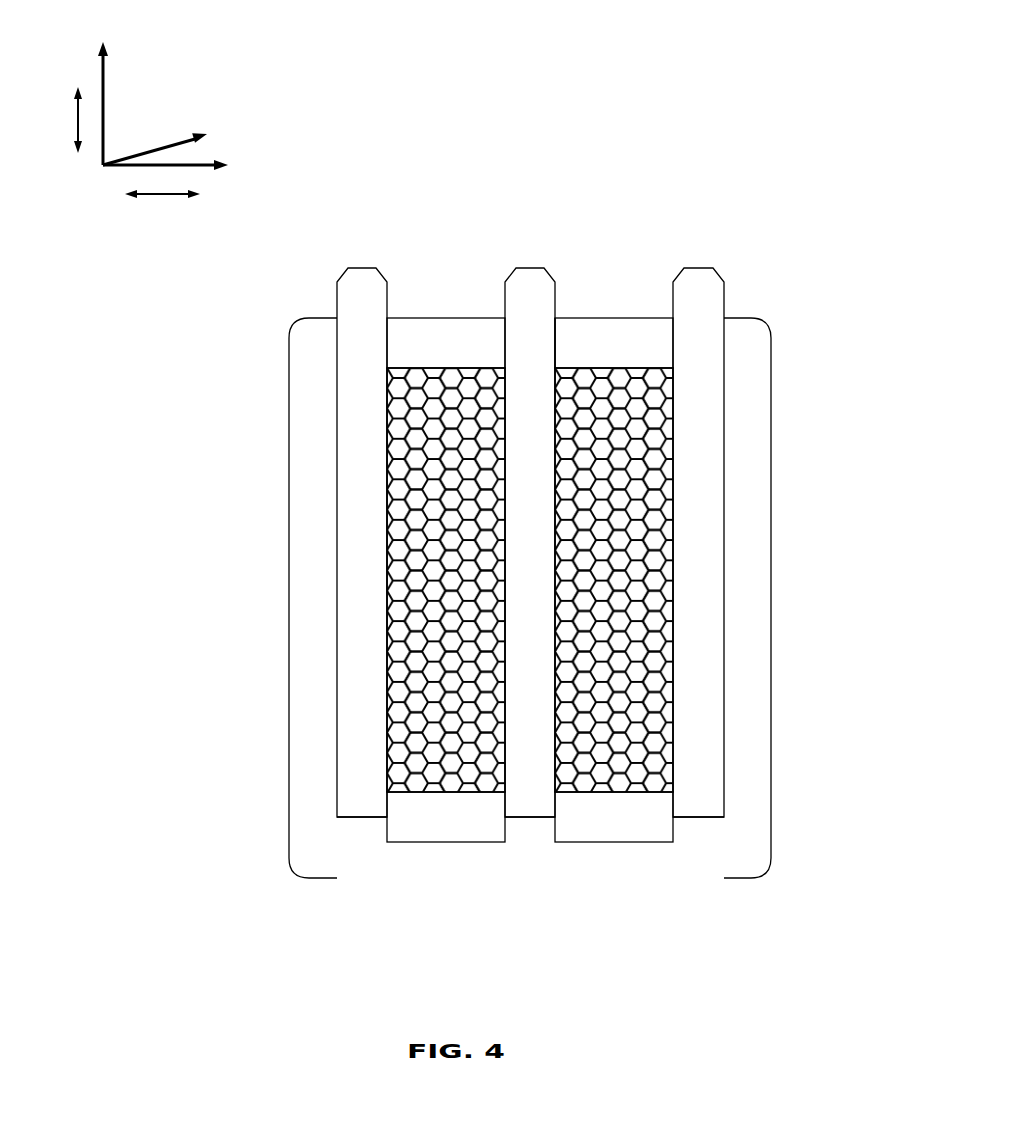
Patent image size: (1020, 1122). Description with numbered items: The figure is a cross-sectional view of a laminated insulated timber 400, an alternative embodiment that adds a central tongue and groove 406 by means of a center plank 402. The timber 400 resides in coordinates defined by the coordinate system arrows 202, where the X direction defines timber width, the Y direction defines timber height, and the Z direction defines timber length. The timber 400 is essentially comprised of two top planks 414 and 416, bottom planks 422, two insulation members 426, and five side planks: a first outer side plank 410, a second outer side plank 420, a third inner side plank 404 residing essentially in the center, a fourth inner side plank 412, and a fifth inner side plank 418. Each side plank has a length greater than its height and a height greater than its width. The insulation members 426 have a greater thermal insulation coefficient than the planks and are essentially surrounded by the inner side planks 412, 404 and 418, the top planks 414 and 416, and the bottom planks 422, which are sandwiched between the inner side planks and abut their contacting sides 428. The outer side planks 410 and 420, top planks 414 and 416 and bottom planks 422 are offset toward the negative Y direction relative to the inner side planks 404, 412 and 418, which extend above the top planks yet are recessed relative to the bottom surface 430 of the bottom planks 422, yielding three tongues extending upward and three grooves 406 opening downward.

The coordinate system arrows 202 is at (280, 122).
The laminated insulated timber 400 is at (552, 86).
The center plank 402 is at (555, 305).
The third inner side plank 404 is at (530, 268).
The groove 406 is at (532, 855).
The first outer side plank 410 is at (289, 472).
The fourth inner side plank 412 is at (337, 302).
The top plank 414 is at (437, 318).
The top plank 416 is at (627, 318).
The fifth inner side plank 418 is at (724, 298).
The second outer side plank 420 is at (773, 432).
The bottom plank 422 is at (385, 825).
The insulation member 426 is at (546, 716).
The contacting sides 428 is at (538, 633).
The bottom surface 430 is at (478, 845).